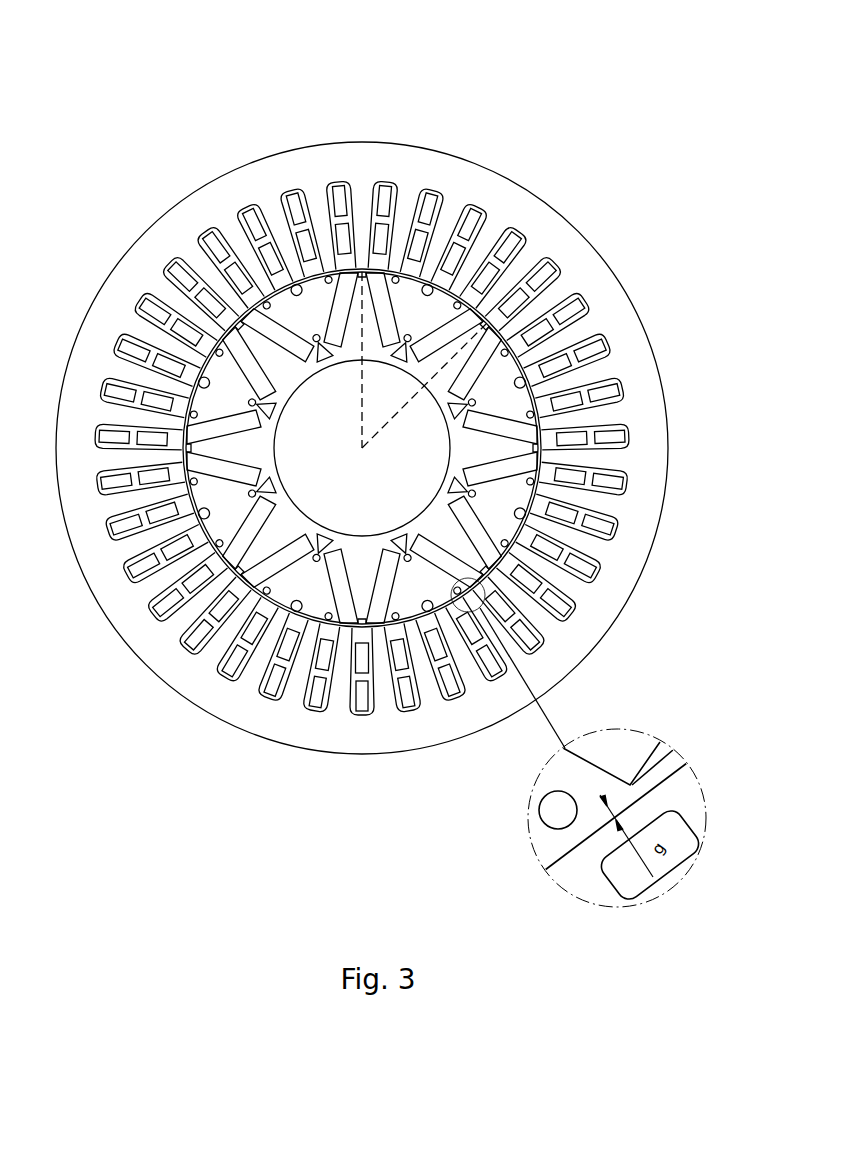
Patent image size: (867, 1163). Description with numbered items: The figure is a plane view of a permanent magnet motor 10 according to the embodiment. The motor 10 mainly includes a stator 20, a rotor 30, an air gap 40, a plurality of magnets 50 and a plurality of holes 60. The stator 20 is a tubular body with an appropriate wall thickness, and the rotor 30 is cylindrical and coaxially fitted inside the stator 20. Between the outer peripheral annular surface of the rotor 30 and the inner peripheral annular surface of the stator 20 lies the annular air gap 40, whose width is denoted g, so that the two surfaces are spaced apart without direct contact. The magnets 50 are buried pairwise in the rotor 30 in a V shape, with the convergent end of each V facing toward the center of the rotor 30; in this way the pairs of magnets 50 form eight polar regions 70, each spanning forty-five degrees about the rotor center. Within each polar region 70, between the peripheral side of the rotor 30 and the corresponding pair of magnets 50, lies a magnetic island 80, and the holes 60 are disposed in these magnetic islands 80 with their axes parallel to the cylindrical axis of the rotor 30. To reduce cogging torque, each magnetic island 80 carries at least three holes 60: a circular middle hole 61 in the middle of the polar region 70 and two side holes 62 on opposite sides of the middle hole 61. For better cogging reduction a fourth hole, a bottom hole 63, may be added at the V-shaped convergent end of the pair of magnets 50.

The permanent magnet motor 10 is at (110, 776).
The stator 20 is at (359, 162).
The rotor 30 is at (365, 567).
The air gap 40 is at (416, 344).
The magnets 50 is at (308, 268).
The holes 60 is at (425, 275).
The middle hole 61 is at (461, 299).
The side holes 62 is at (398, 277).
The bottom hole 63 is at (412, 337).
The polar regions 70 is at (463, 426).
The magnetic islands 80 is at (323, 268).